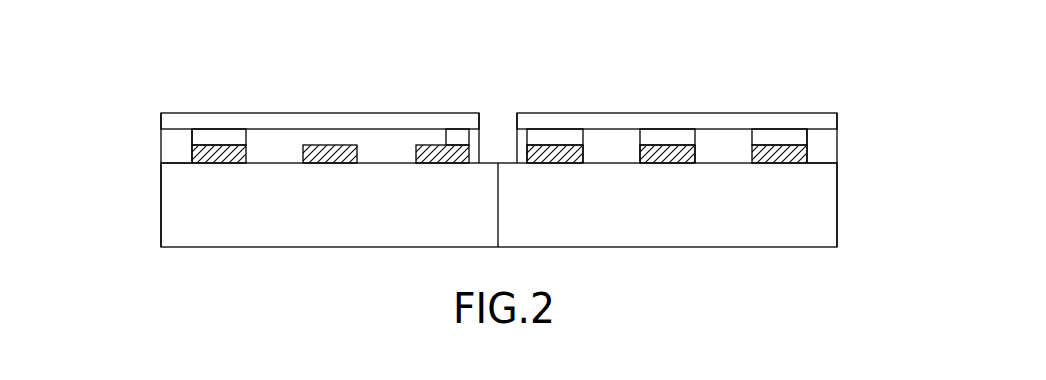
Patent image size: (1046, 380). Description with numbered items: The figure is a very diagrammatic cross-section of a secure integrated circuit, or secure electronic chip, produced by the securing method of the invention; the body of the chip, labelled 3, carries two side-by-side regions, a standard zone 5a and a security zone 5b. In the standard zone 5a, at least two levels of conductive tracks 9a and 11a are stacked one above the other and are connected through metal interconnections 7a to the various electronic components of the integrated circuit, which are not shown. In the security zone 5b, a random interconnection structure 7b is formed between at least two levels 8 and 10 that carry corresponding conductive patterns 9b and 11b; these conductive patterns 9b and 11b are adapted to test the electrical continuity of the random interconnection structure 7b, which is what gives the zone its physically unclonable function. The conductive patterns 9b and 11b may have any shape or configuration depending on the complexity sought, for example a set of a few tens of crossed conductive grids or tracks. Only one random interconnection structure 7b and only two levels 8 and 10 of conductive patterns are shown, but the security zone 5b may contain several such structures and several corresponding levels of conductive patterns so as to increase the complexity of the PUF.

The substrate 3 is at (337, 233).
The standard zone 5a is at (672, 99).
The security zone 5b is at (340, 99).
The metal interconnections 7a is at (811, 137).
The random interconnection structure 7b is at (186, 139).
The level 8 is at (156, 159).
The conductive tracks 9a is at (806, 150).
The conductive patterns 9b is at (192, 152).
The level 10 is at (150, 119).
The conductive tracks 11a is at (792, 118).
The conductive patterns 11b is at (192, 118).